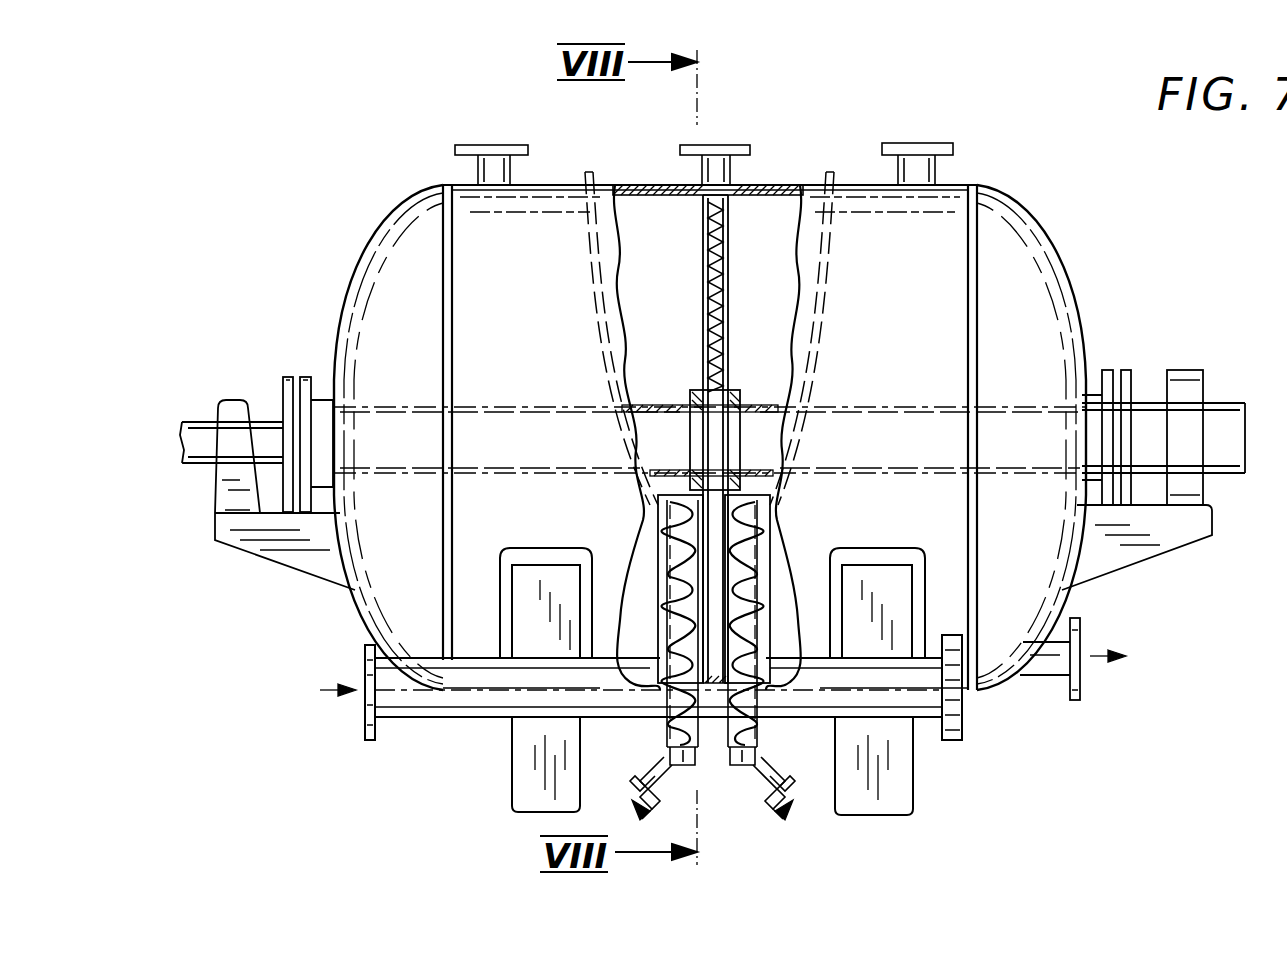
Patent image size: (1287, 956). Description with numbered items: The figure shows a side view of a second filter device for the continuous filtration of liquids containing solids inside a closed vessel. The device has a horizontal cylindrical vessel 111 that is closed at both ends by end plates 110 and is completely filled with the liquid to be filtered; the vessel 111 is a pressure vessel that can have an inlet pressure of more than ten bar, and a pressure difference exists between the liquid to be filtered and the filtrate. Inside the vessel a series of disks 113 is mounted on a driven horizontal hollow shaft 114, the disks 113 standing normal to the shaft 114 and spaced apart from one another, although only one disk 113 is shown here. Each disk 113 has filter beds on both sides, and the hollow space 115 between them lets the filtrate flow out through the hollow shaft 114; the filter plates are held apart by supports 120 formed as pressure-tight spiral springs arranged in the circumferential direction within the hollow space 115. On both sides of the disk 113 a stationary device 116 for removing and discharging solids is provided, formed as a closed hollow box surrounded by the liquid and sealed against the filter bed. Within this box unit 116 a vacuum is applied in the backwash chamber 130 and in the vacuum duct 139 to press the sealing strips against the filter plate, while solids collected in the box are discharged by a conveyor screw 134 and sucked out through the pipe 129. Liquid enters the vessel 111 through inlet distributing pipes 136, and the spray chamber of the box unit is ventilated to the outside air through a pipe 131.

The end plates 110 is at (346, 300).
The horizontal cylindrical vessel 111 is at (860, 280).
The disks 113 is at (735, 242).
The driven horizontal hollow shaft 114 is at (823, 410).
The hollow space 115 is at (707, 240).
The device for removing and discharging solids 116 is at (667, 523).
The supports 120 is at (722, 292).
The pipe 129 is at (1047, 670).
The backwash chamber 130 is at (700, 563).
The pipe 131 is at (583, 173).
The conveyor screw 134 is at (660, 722).
The inlet distributing pipes 136 is at (417, 702).
The vacuum duct 139 is at (672, 620).